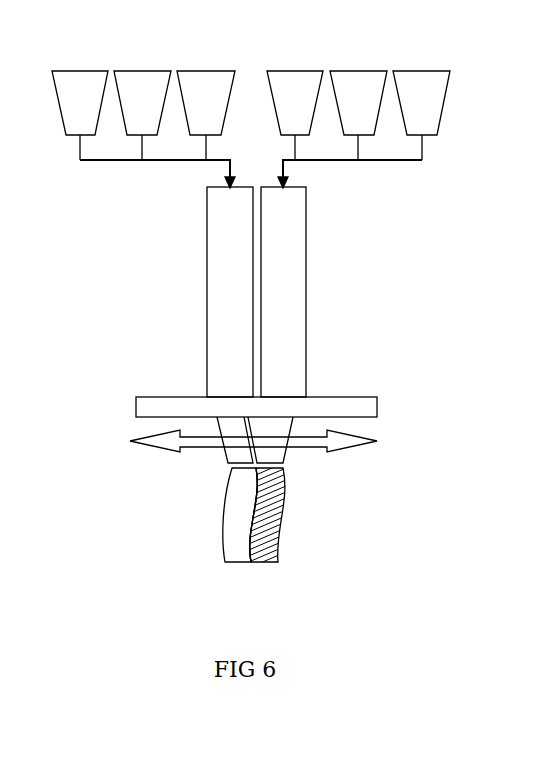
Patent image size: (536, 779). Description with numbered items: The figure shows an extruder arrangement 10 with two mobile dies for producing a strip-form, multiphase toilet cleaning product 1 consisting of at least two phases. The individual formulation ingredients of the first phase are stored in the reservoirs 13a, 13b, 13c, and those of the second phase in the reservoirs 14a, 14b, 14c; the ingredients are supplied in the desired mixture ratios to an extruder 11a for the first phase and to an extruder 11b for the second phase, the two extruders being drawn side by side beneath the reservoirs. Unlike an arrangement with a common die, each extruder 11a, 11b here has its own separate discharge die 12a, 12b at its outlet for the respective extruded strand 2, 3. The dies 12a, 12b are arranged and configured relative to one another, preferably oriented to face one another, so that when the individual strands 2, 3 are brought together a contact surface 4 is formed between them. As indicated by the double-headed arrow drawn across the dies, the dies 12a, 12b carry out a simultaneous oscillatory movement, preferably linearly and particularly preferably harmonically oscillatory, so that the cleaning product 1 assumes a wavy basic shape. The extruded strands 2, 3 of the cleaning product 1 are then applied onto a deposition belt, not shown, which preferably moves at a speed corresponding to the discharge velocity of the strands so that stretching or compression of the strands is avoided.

The strip-form cleaning product 1 is at (212, 523).
The extruded strand 2 is at (238, 557).
The extruded strand 3 is at (268, 555).
The contact surface 4 is at (252, 555).
The production apparatus 10 is at (122, 283).
The extruder 11a is at (212, 273).
The extruder 11b is at (287, 286).
The discharge die 12a is at (238, 450).
The discharge die 12b is at (272, 453).
The reservoir 13a is at (81, 63).
The reservoir 13b is at (142, 63).
The reservoir 13c is at (201, 63).
The reservoir 14a is at (299, 63).
The reservoir 14b is at (362, 63).
The reservoir 14c is at (422, 63).